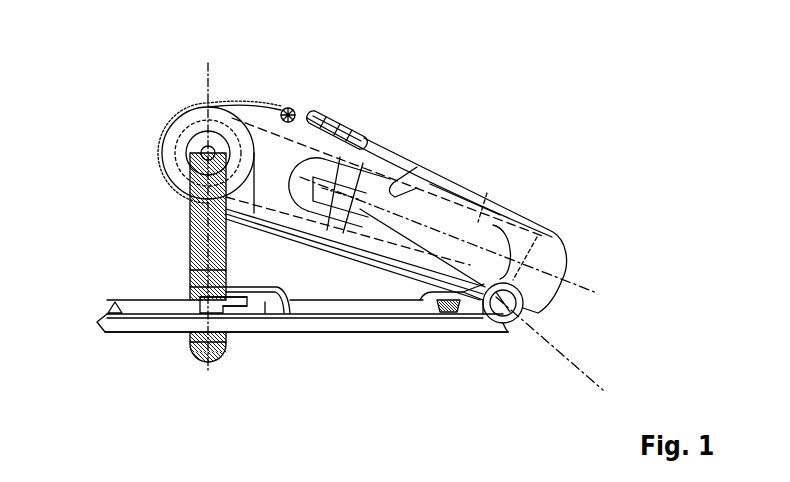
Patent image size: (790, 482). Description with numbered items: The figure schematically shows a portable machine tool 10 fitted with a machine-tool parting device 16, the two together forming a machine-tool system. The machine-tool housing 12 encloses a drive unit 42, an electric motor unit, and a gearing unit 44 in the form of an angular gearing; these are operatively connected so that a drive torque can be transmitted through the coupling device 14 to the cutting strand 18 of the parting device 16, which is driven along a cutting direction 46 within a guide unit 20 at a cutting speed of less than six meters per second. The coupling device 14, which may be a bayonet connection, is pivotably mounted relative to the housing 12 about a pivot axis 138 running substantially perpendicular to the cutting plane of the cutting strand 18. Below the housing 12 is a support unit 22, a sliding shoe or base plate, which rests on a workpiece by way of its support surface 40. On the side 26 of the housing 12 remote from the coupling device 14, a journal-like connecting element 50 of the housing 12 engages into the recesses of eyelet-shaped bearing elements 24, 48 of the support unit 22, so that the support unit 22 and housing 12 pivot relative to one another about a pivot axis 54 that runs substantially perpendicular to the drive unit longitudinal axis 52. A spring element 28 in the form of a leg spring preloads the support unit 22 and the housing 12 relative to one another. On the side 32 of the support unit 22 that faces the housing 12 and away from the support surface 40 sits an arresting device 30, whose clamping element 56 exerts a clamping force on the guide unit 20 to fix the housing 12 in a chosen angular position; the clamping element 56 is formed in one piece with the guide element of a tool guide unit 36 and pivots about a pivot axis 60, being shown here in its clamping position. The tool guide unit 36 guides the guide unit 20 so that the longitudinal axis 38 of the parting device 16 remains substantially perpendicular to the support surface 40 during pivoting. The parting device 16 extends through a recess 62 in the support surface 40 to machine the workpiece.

The portable machine tool 10 is at (528, 68).
The machine-tool housing 12 is at (390, 158).
The coupling device 14 is at (130, 135).
The pivot axis 138 is at (192, 122).
The longitudinal axis 38 is at (212, 72).
The gearing unit 44 is at (343, 135).
The drive unit 42 is at (490, 192).
The cutting strand 18 is at (187, 235).
The cutting direction 46 is at (173, 268).
The machine-tool parting device 16 is at (157, 257).
The guide unit 20 is at (190, 270).
The side 32 is at (292, 285).
The arresting device 30 is at (150, 350).
The support surface 40 is at (350, 334).
The recess 62 is at (107, 301).
The tool guide unit 36 is at (262, 353).
The clamping element 56 is at (229, 305).
The pivot axis 60 is at (190, 332).
The bearing element 48 is at (423, 303).
The spring element 28 is at (440, 313).
The bearing element 24 is at (480, 316).
The journal-like connecting element 50 is at (506, 320).
The support unit 22 is at (463, 363).
The side 26 is at (617, 278).
The drive unit longitudinal axis 52 is at (593, 297).
The pivot axis 54 is at (606, 388).